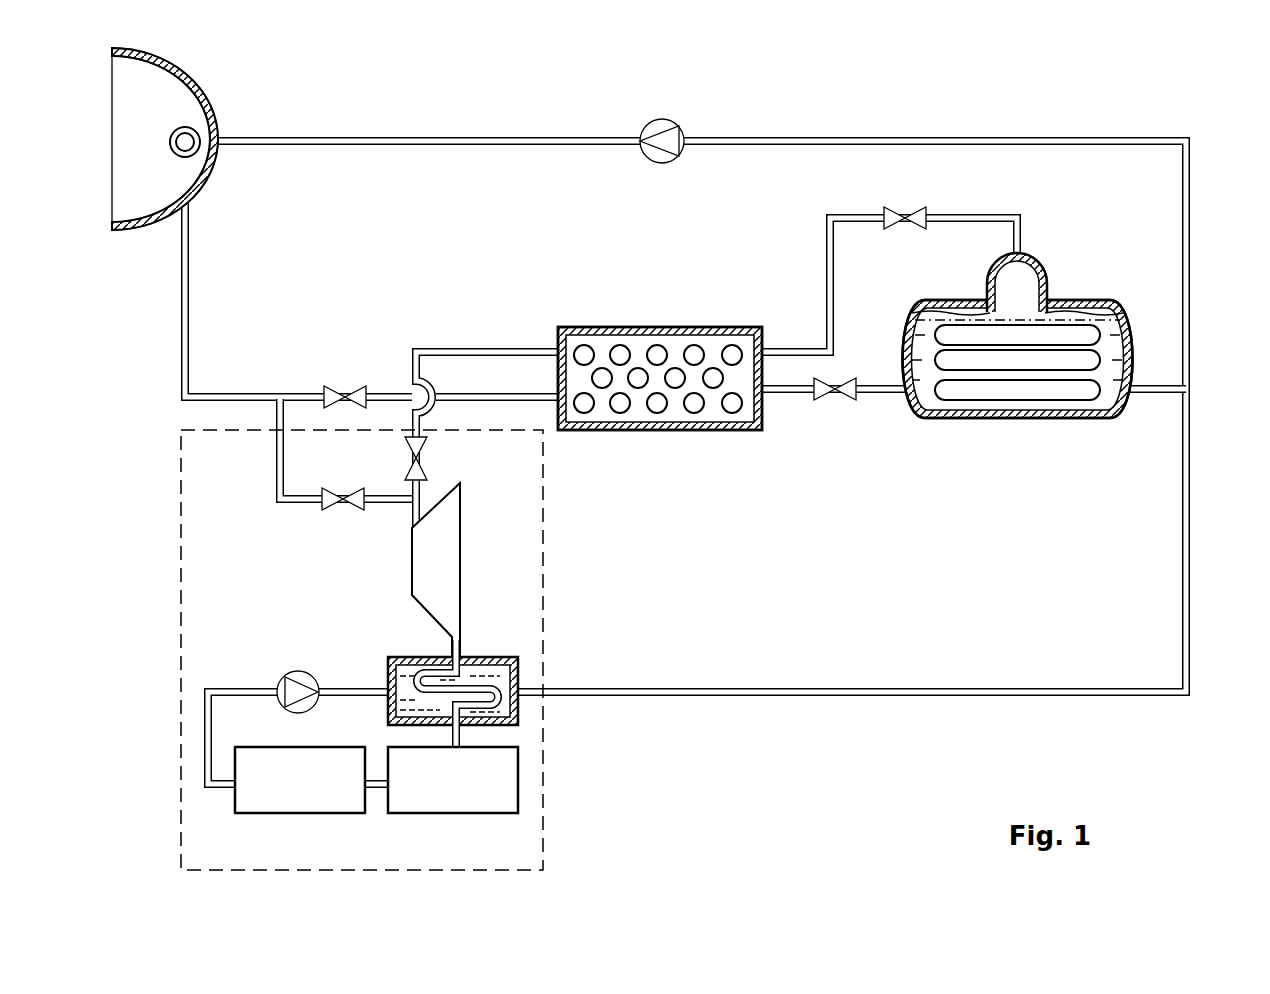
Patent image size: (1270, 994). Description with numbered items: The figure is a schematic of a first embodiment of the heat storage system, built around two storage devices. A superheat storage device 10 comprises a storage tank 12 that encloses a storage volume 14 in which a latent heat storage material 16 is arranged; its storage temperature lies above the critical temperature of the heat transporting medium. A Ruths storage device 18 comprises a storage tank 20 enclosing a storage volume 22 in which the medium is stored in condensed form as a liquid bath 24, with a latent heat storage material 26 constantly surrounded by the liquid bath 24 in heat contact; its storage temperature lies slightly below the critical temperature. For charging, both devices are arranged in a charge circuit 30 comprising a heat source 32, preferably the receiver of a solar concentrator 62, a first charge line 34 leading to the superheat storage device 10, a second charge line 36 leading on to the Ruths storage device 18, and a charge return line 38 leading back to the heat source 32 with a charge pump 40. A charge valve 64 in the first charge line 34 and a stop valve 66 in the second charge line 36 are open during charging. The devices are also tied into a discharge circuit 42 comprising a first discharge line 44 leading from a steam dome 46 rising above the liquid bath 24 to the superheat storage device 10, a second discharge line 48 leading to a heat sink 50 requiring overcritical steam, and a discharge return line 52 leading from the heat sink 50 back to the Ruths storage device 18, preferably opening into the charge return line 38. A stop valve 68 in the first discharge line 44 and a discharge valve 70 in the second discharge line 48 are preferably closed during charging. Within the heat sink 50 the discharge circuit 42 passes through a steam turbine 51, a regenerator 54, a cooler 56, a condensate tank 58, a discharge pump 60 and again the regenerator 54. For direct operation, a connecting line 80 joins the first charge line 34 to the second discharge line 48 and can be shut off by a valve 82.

The superheat storage device 10 is at (644, 375).
The storage tank 12 is at (570, 330).
The storage volume 14 is at (745, 415).
The latent heat storage material 16 is at (655, 410).
The Ruths storage device 18 is at (1041, 339).
The storage tank 20 is at (1133, 348).
The storage volume 22 is at (1090, 410).
The liquid bath 24 is at (1122, 300).
The latent heat storage material 26 is at (1010, 395).
The charge circuit 30 is at (1058, 130).
The heat source 32 is at (203, 152).
The first charge line 34 is at (189, 300).
The second charge line 36 is at (790, 395).
The charge return line 38 is at (1192, 210).
The charge pump 40 is at (680, 132).
The discharge circuit 42 is at (1097, 668).
The first discharge line 44 is at (960, 218).
The steam dome 46 is at (1005, 290).
The second discharge line 48 is at (416, 530).
The heat sink 50 is at (388, 650).
The steam turbine 51 is at (455, 560).
The discharge return line 52 is at (1190, 620).
The regenerator 54 is at (490, 655).
The cooler 56 is at (453, 795).
The condensate tank 58 is at (303, 795).
The discharge pump 60 is at (300, 670).
The solar concentrator 62 is at (205, 85).
The charge valve 64 is at (345, 385).
The stop valve 66 is at (838, 405).
The stop valve 68 is at (905, 232).
The discharge valve 70 is at (422, 470).
The connecting line 80 is at (276, 455).
The valve 82 is at (343, 487).